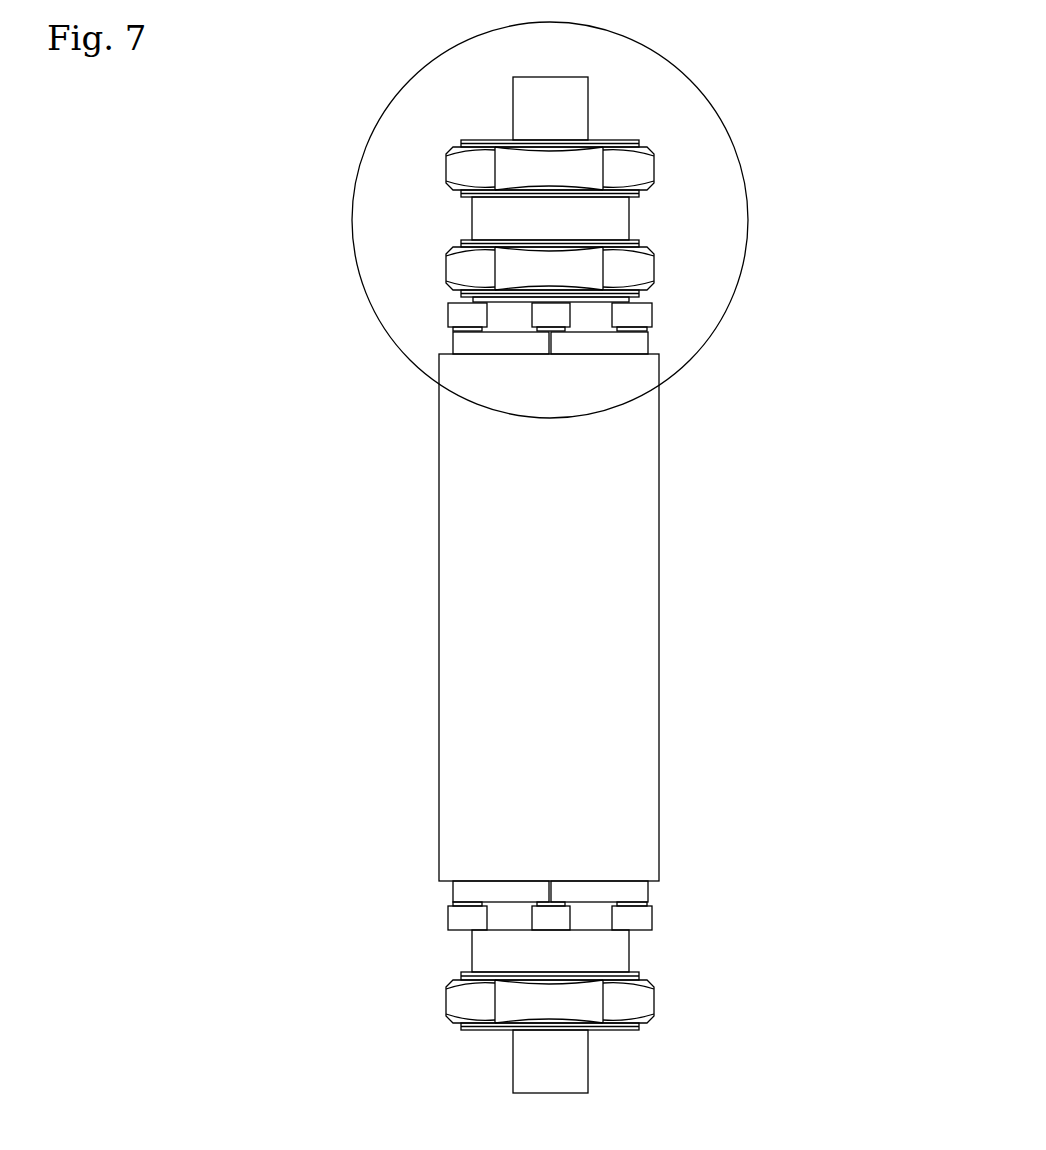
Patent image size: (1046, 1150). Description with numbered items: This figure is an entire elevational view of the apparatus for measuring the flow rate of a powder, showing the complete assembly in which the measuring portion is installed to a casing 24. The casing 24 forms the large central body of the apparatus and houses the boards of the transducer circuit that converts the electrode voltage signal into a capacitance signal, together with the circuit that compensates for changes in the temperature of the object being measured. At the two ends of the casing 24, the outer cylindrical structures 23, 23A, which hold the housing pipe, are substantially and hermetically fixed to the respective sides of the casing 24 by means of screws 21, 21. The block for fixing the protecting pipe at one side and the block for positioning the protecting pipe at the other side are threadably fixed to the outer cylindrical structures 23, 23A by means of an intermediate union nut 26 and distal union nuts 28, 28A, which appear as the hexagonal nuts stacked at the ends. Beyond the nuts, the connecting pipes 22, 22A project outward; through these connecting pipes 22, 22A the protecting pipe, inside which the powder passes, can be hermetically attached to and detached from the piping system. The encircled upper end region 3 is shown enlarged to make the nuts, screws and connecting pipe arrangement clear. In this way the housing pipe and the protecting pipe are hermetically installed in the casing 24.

The connecting pipe 22 is at (575, 115).
The distal union nut 28 is at (642, 167).
The intermediate union nut 26 is at (642, 268).
The joint portion 3 is at (730, 305).
The screw 21 is at (460, 315).
The outer cylindrical structure 23 is at (637, 340).
The casing 24 is at (647, 677).
The outer cylindrical structure 23A is at (625, 887).
The distal union nut 28A is at (633, 1003).
The connecting pipe 22A is at (563, 1078).